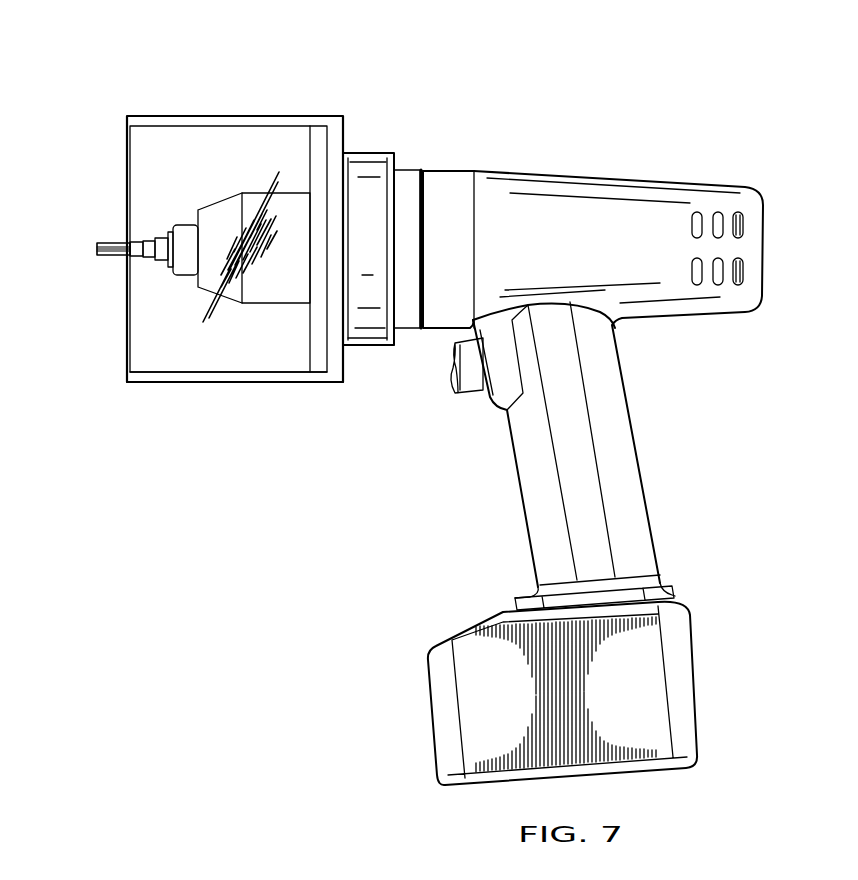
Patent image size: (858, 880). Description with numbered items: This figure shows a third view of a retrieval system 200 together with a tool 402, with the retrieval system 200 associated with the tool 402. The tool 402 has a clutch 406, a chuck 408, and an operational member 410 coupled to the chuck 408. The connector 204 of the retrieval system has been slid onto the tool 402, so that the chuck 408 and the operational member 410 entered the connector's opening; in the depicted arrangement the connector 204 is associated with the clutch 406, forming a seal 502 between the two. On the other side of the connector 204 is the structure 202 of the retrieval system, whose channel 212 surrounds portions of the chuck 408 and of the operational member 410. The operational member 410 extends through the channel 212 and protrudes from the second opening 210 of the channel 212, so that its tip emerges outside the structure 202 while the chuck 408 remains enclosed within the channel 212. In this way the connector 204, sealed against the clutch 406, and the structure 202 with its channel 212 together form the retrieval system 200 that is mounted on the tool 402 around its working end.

The retrieval system 200 is at (228, 92).
The structure 202 is at (226, 384).
The connector 204 is at (363, 152).
The second opening 210 is at (128, 121).
The channel 212 is at (148, 340).
The tool 402 is at (668, 463).
The clutch 406 is at (412, 170).
The chuck 408 is at (218, 200).
The operational member 410 is at (112, 240).
The seal 502 is at (403, 339).